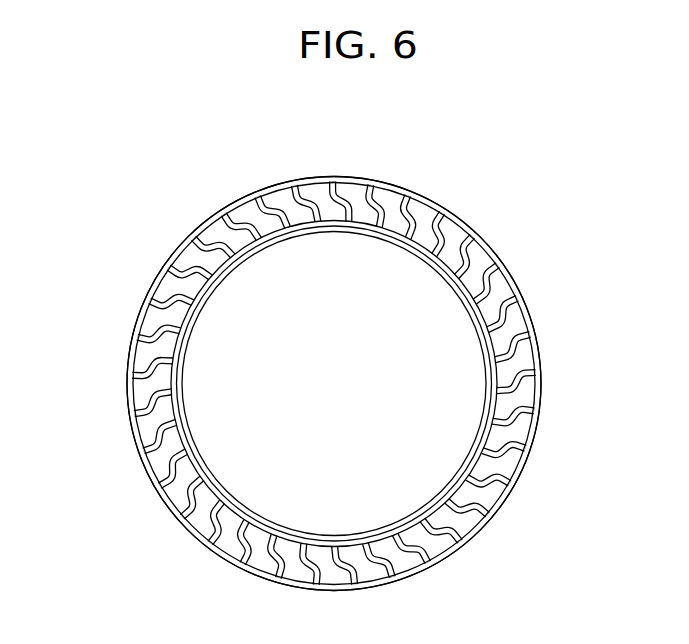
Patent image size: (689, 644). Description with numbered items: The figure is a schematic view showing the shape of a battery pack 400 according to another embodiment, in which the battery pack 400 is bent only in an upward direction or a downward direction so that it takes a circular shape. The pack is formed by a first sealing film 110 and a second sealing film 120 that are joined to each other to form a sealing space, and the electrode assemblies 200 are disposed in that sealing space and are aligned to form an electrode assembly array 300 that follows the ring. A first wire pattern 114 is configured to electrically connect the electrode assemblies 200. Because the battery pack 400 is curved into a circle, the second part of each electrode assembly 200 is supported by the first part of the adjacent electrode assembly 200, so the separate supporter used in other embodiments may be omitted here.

The battery pack 400 is at (580, 125).
The electrode assembly array 300 is at (101, 369).
The electrode assemblies 200 is at (453, 233).
The second sealing film 120 is at (517, 292).
The first sealing film 110 is at (490, 370).
The first wire pattern 114 is at (500, 404).